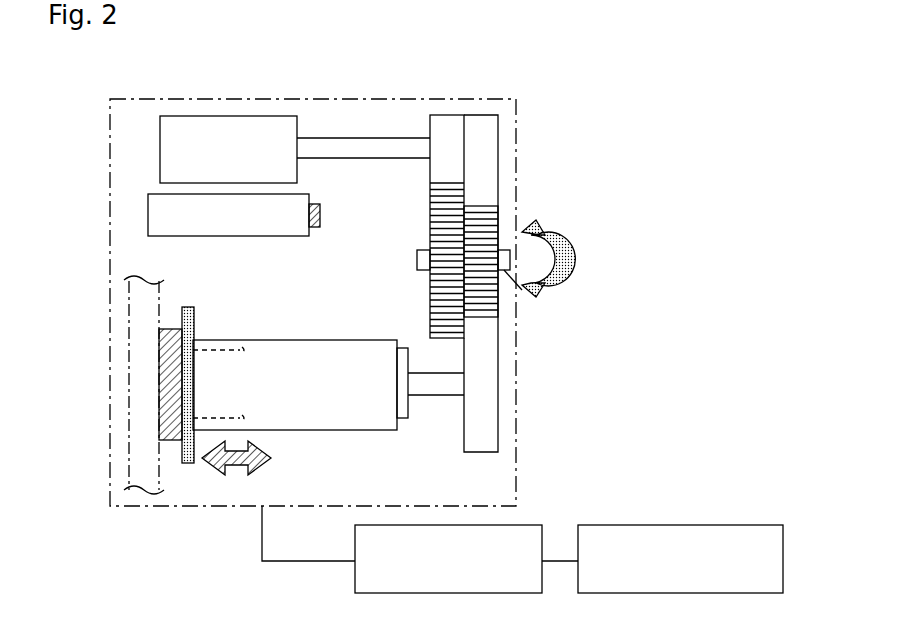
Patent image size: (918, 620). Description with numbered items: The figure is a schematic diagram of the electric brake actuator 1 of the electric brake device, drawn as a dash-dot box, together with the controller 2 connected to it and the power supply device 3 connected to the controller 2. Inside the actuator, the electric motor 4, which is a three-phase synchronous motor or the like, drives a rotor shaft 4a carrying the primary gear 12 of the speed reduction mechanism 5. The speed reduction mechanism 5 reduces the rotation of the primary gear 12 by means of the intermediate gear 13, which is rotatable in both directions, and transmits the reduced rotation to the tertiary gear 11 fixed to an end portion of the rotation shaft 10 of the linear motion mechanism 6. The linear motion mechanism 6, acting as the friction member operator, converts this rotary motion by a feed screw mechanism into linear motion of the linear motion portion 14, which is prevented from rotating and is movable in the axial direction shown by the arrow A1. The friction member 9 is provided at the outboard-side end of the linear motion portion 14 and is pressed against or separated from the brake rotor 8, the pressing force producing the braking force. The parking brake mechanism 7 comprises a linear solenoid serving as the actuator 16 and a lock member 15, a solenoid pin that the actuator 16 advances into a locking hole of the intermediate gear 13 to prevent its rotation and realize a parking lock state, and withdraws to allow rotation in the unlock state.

The electric brake actuator 1 is at (110, 160).
The controller 2 is at (529, 525).
The power supply device 3 is at (651, 525).
The electric motor 4 is at (233, 118).
The rotor shaft 4a is at (313, 142).
The speed reduction mechanism 5 is at (539, 266).
The linear motion mechanism 6 is at (366, 423).
The parking brake mechanism 7 is at (234, 262).
The brake rotor 8 is at (139, 300).
The friction member 9 is at (176, 437).
The rotation shaft 10 is at (438, 388).
The tertiary gear 11 is at (543, 283).
The primary gear 12 is at (463, 120).
The intermediate gear 13 is at (512, 312).
The linear motion portion 14 is at (243, 356).
The lock member 15 is at (315, 227).
The actuator 16 is at (226, 236).
The arrow A1 is at (271, 462).